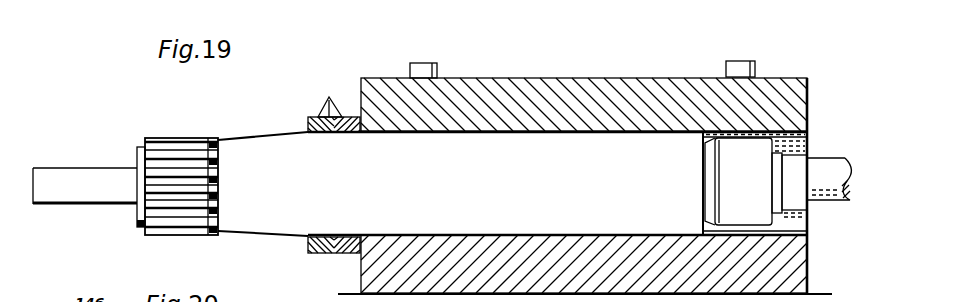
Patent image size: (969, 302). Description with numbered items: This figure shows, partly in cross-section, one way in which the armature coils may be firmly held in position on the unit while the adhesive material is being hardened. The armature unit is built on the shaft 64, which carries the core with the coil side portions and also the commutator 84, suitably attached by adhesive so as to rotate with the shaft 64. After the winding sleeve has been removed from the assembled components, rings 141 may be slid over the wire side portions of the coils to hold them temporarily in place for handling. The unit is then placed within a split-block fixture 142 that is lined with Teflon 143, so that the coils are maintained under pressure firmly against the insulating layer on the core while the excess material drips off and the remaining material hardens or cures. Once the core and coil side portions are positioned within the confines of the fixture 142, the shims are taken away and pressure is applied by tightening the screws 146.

The shaft 64 is at (70, 196).
The commutator 84 is at (152, 138).
The rings 141 is at (334, 167).
The split-block fixture 142 is at (545, 78).
The Teflon lining 143 is at (588, 131).
The screws 146 is at (440, 71).